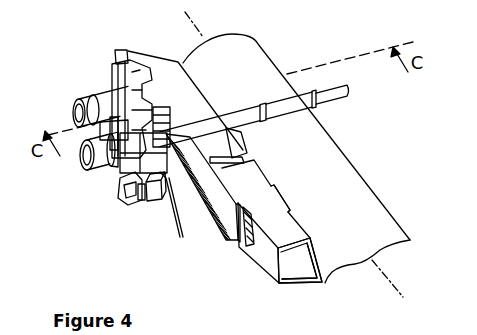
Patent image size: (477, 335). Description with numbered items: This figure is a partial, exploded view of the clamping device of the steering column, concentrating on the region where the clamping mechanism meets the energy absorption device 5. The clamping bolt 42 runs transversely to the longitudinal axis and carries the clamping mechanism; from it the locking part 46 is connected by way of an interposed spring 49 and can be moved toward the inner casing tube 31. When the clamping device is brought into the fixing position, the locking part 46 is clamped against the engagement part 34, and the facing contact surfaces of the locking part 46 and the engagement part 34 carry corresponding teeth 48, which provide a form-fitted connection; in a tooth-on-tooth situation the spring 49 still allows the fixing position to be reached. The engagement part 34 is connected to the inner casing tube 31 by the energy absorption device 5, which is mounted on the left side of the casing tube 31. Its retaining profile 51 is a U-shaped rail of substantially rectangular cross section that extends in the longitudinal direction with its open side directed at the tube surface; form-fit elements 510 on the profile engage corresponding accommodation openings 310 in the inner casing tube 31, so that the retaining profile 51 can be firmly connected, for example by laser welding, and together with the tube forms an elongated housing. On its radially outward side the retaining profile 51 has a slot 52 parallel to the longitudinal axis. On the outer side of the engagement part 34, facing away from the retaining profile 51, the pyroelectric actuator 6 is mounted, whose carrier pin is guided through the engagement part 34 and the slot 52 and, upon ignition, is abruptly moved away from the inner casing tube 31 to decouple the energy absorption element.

The pyroelectric actuator 6 is at (112, 102).
The clamping bolt 42 is at (280, 108).
The form-fit elements 510 is at (290, 198).
The accommodation openings 310 is at (291, 204).
The inner casing tube 31 is at (365, 215).
The spring 49 is at (138, 200).
The locking part 46 is at (157, 192).
The teeth 48 is at (176, 216).
The engagement part 34 is at (222, 227).
The slot 52 is at (248, 245).
The energy absorption device 5 is at (250, 268).
The retaining profile 51 is at (285, 232).